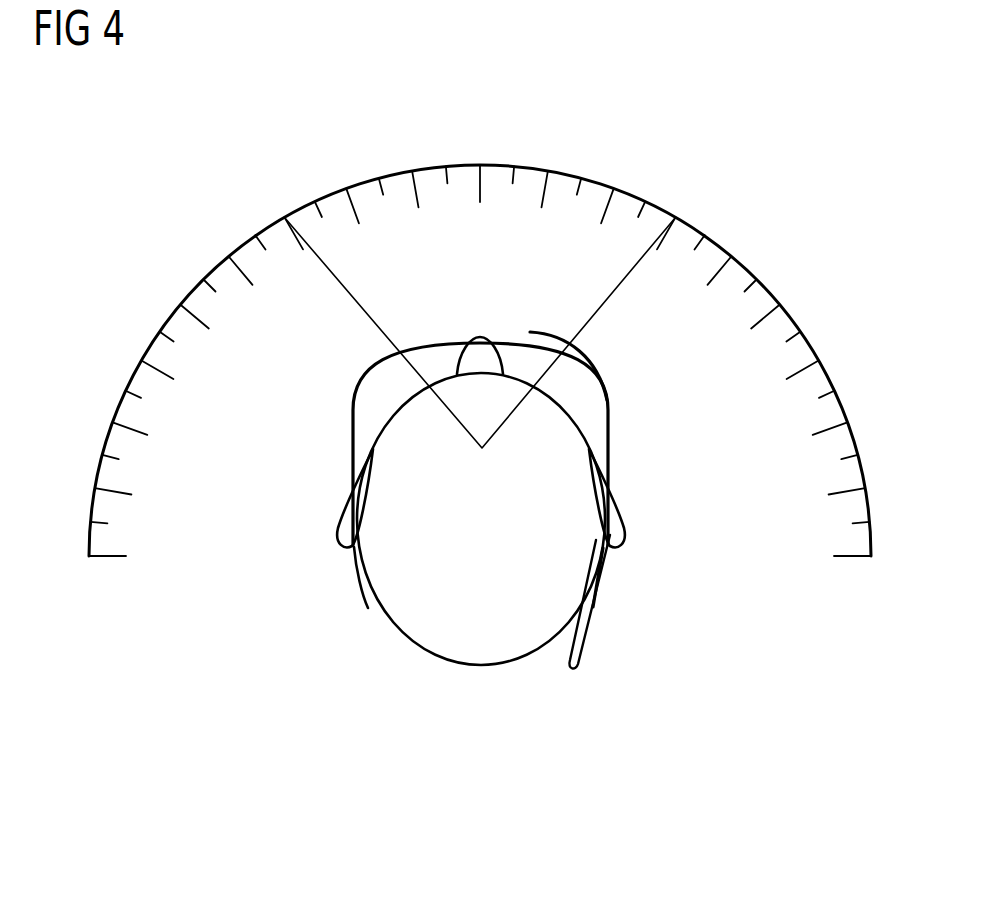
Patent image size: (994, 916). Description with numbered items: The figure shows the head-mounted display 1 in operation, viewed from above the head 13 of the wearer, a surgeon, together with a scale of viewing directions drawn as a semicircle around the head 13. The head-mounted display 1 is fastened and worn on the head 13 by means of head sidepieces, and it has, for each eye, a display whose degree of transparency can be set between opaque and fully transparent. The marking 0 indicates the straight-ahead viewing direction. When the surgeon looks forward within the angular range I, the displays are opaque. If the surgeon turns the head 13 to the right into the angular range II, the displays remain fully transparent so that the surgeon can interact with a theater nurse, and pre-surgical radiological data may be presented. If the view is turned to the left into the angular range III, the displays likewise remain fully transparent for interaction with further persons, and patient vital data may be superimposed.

The head-mounted display 1 is at (590, 634).
The head 13 is at (430, 632).
The 0 degree reference direction (front) 0 is at (478, 668).
The angular range I is at (435, 95).
The angular range II is at (840, 308).
The angular range III is at (120, 308).